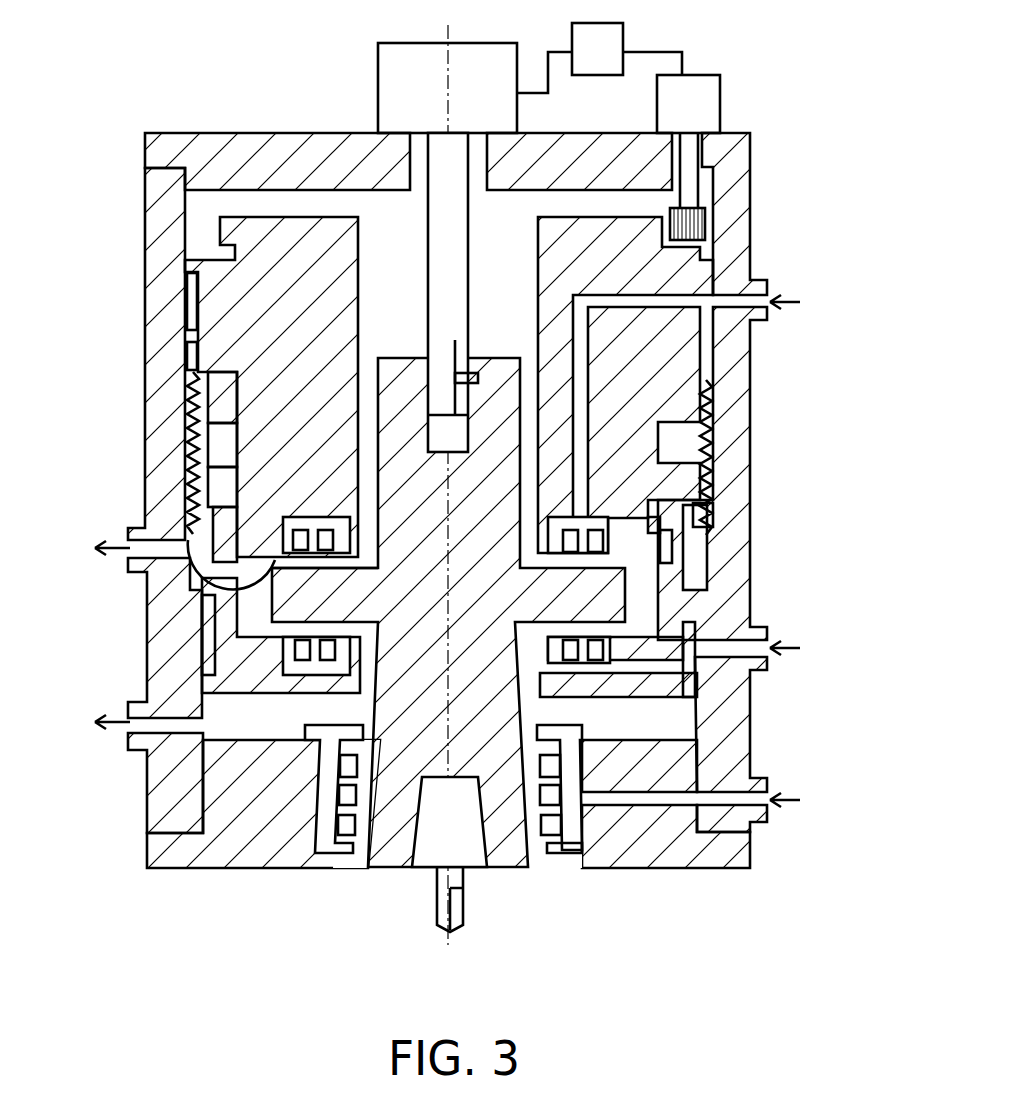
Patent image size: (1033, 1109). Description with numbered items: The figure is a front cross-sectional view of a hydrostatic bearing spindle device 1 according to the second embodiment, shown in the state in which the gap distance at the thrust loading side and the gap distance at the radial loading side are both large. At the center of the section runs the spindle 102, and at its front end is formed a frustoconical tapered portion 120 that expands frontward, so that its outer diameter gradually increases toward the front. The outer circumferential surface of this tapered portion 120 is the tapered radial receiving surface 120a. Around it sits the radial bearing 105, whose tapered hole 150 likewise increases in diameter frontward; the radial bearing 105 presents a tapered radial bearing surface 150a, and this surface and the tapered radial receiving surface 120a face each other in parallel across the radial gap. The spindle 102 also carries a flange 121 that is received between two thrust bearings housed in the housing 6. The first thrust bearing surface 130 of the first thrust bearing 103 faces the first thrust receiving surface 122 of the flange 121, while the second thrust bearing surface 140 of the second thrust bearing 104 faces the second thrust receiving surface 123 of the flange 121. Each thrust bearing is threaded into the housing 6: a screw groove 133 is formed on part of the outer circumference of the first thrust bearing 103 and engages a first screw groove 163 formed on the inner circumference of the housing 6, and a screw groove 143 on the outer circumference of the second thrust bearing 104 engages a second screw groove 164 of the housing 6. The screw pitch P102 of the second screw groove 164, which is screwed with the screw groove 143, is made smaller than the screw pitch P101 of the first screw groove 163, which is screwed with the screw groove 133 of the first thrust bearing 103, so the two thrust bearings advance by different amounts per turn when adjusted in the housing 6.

The hydrostatic bearing spindle device 1 is at (207, 96).
The housing 6 is at (165, 268).
The spindle 102 is at (503, 853).
The first thrust bearing 103 is at (235, 670).
The second thrust bearing 104 is at (262, 367).
The radial bearing 105 is at (245, 858).
The tapered portion 120 is at (661, 608).
The tapered radial receiving surface 120a is at (522, 760).
The flange 121 is at (600, 600).
The first thrust receiving surface 122 is at (448, 532).
The second thrust receiving surface 123 is at (366, 568).
The first thrust bearing surface 130 is at (235, 628).
The screw groove 133 is at (230, 475).
The second thrust bearing surface 140 is at (185, 528).
The screw groove 143 is at (227, 405).
The tapered hole 150 is at (377, 793).
The tapered radial bearing surface 150a is at (357, 797).
The first screw groove 163 is at (695, 518).
The second screw groove 164 is at (695, 437).
The screw pitch P101 is at (250, 455).
The screw pitch P102 is at (250, 375).